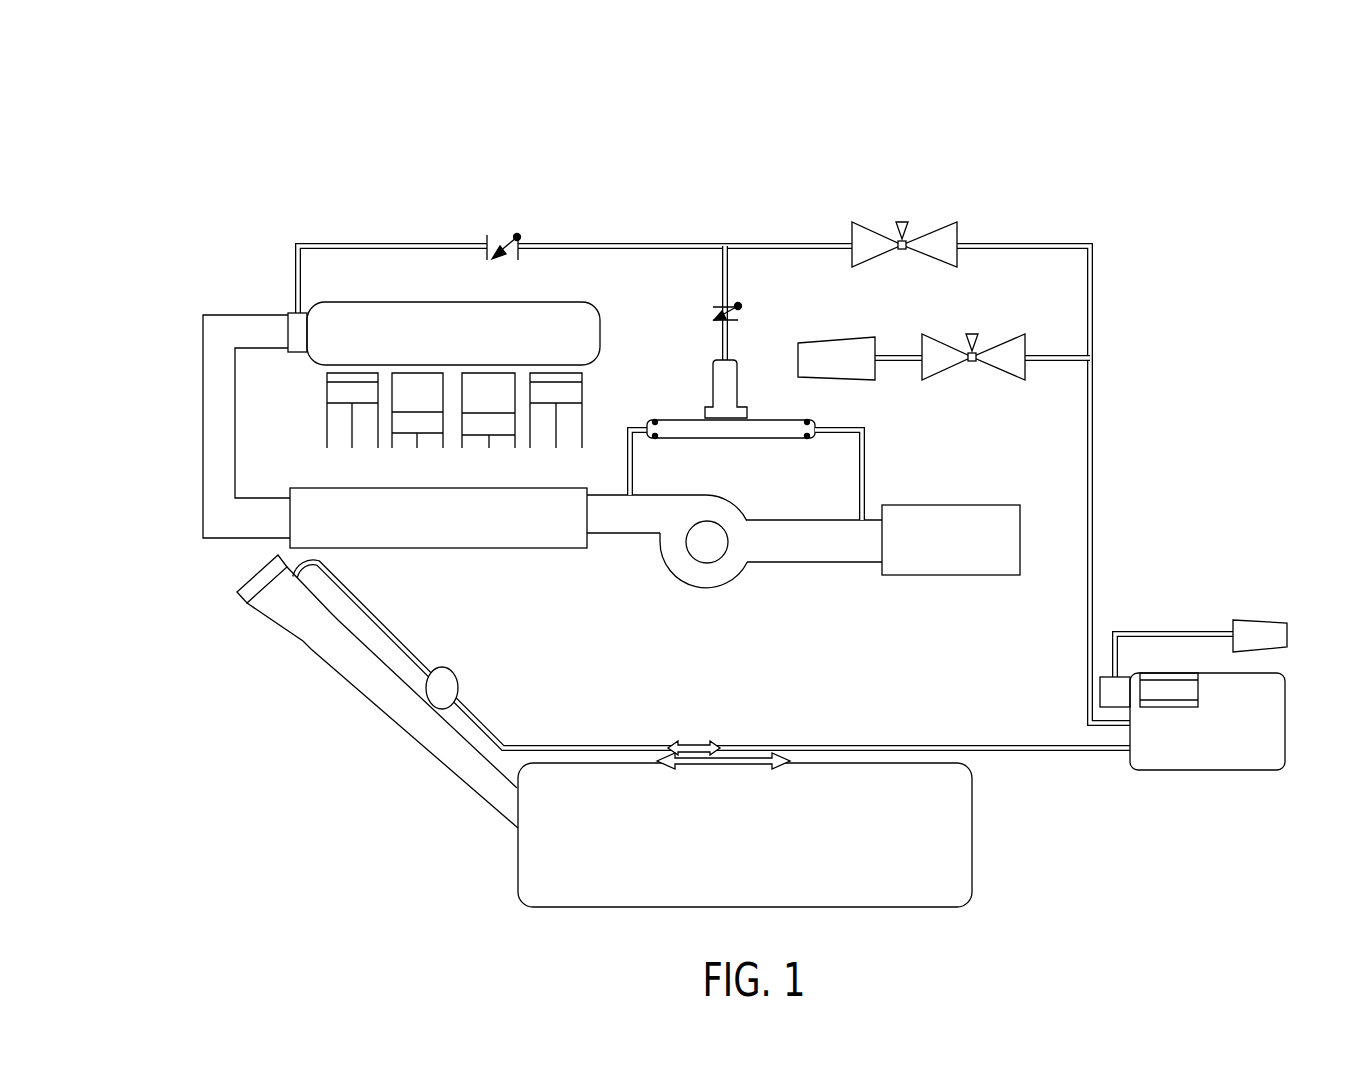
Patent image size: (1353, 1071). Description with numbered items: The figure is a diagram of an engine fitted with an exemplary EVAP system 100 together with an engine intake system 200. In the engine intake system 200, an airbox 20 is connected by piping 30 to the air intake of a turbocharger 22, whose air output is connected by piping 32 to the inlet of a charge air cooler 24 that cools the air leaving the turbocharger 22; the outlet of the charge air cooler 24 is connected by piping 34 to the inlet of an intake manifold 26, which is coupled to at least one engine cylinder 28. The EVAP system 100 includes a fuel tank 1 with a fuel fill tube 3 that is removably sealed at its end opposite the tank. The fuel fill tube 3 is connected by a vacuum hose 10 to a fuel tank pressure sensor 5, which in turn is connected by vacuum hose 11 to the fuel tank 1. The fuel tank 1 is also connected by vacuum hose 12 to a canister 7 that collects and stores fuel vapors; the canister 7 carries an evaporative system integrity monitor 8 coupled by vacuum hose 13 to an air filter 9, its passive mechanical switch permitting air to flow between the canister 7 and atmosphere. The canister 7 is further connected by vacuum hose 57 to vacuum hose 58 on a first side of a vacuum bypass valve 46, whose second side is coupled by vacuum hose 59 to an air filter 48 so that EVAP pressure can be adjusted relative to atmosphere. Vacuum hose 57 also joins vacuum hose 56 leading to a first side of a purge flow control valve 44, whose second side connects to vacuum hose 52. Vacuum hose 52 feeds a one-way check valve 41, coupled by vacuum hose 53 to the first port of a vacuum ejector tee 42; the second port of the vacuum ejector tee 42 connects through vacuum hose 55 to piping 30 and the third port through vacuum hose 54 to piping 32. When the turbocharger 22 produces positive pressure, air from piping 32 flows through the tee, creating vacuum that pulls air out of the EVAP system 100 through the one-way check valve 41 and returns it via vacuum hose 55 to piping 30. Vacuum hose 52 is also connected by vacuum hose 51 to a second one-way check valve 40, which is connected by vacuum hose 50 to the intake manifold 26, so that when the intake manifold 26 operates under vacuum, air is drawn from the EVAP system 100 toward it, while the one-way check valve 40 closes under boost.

The fuel tank 1 is at (744, 890).
The fuel fill tube 3 is at (376, 695).
The fuel tank pressure sensor 5 is at (446, 679).
The canister 7 is at (1247, 758).
The evaporative system integrity monitor 8 is at (1180, 690).
The air filter 9 is at (1262, 633).
The vacuum hose 10 is at (385, 615).
The vacuum hose 11 is at (535, 745).
The vacuum hose 12 is at (835, 745).
The vacuum hose 13 is at (1172, 631).
The airbox 20 is at (990, 520).
The turbocharger 22 is at (726, 576).
The charge air cooler 24 is at (528, 533).
The intake manifold 26 is at (322, 345).
The engine cylinder 28 is at (370, 440).
The piping 30 is at (840, 550).
The piping 32 is at (603, 520).
The piping 34 is at (201, 460).
The one-way check valve 40 is at (503, 262).
The one-way check valve 41 is at (712, 312).
The vacuum ejector tee 42 is at (726, 405).
The purge flow control valve 44 is at (908, 228).
The vacuum bypass valve 46 is at (975, 376).
The air filter 48 is at (836, 367).
The vacuum hose 50 is at (323, 243).
The vacuum hose 51 is at (662, 243).
The vacuum hose 52 is at (768, 243).
The vacuum hose 53 is at (721, 345).
The vacuum hose 54 is at (625, 450).
The vacuum hose 55 is at (866, 470).
The vacuum hose 56 is at (1093, 272).
The vacuum hose 57 is at (1093, 462).
The vacuum hose 58 is at (1050, 366).
The vacuum hose 59 is at (898, 350).
The EVAP system 100 is at (1082, 858).
The engine intake system 200 is at (647, 598).